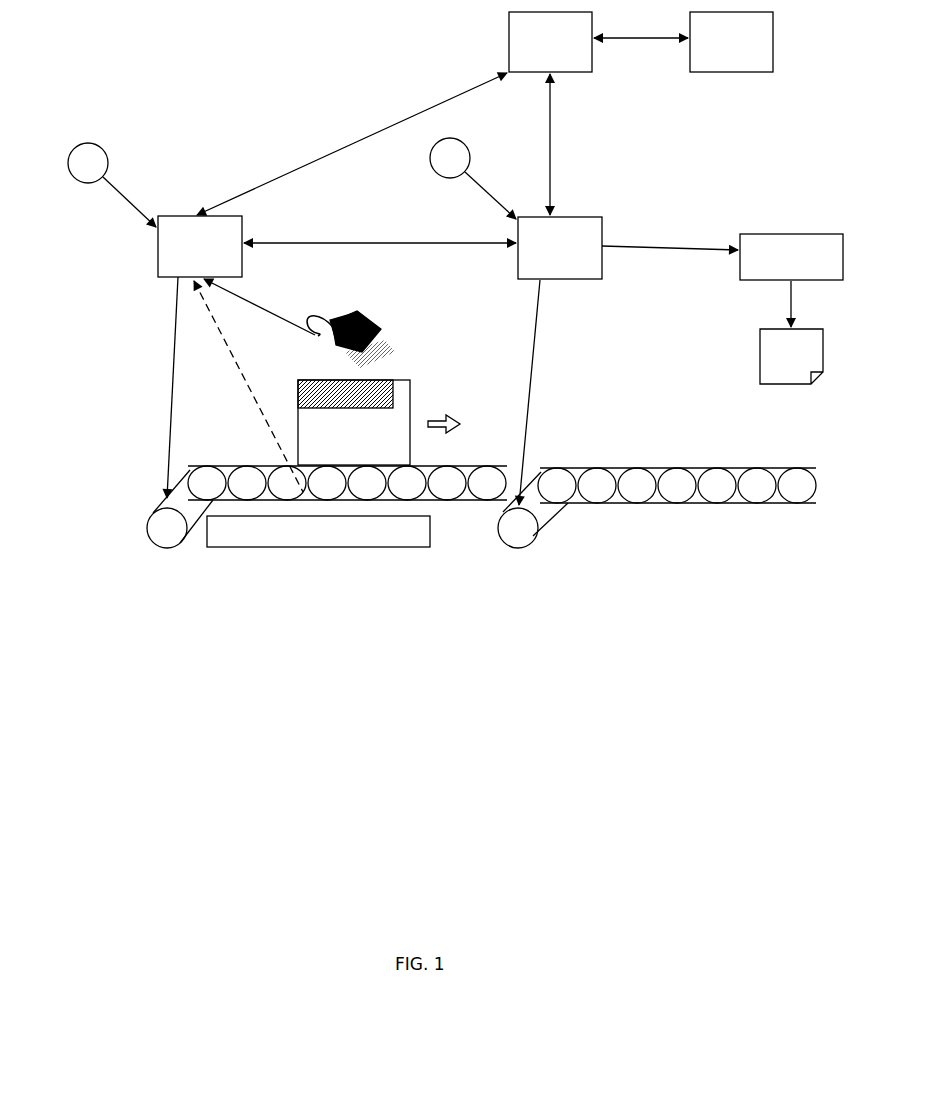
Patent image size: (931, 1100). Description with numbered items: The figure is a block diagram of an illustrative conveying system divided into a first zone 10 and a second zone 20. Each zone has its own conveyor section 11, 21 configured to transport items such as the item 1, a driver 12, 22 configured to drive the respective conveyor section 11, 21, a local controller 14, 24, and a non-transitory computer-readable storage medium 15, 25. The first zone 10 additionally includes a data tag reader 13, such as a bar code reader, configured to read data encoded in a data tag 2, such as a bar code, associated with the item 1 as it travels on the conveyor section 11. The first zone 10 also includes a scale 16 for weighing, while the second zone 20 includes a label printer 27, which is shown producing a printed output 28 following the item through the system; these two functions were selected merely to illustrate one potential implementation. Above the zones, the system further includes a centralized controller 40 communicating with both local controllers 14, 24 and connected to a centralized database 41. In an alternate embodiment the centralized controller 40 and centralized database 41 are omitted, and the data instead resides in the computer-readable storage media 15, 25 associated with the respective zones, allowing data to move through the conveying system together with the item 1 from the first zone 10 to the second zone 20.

The item 1 is at (361, 449).
The data tag 2 is at (298, 380).
The first zone 10 is at (295, 501).
The conveyor section 11 is at (208, 467).
The driver 12 is at (157, 540).
The data tag reader 13 is at (363, 322).
The local controller 14 is at (211, 256).
The non-transitory computer-readable storage medium 15 is at (74, 177).
The scale 16 is at (318, 532).
The second zone 20 is at (682, 445).
The conveyor section 21 is at (772, 467).
The driver 22 is at (510, 445).
The local controller 24 is at (571, 257).
The non-transitory computer-readable storage medium 25 is at (436, 172).
The label printer 27 is at (802, 266).
The printed label 28 is at (796, 367).
The centralized controller 40 is at (562, 57).
The centralized database 41 is at (743, 57).